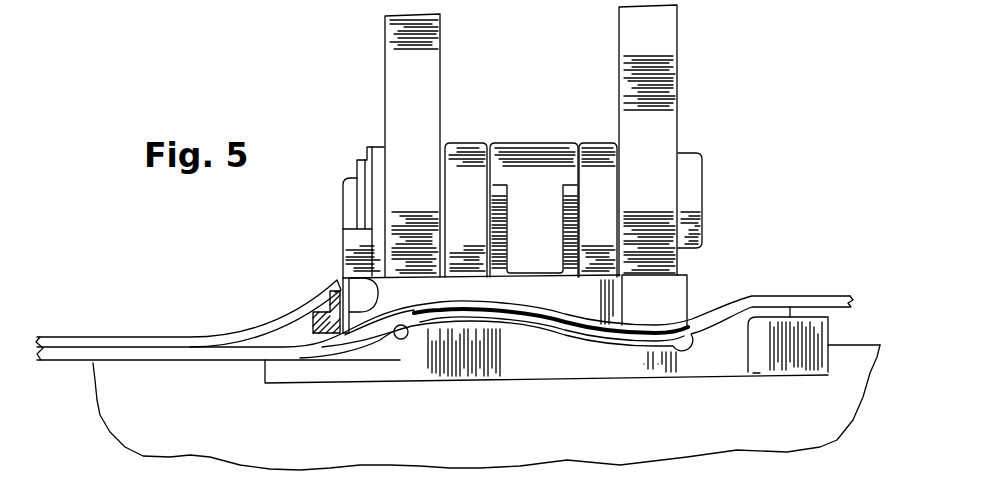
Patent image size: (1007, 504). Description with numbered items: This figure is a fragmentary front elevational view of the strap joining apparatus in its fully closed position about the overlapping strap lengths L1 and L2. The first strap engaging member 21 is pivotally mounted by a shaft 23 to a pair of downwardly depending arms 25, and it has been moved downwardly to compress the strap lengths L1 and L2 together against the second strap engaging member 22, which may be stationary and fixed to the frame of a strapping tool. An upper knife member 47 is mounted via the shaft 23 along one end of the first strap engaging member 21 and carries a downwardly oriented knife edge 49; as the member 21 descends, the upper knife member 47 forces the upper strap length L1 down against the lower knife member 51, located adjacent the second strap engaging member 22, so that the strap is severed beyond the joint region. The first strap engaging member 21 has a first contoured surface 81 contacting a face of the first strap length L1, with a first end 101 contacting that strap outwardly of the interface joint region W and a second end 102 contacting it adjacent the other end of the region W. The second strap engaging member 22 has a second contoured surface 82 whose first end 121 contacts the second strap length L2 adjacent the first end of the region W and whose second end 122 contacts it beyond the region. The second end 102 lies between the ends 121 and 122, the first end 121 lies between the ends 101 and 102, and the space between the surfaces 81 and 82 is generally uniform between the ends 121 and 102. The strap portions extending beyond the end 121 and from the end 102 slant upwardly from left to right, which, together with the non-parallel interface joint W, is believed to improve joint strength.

The first strap engaging member 21 is at (691, 284).
The second strap engaging member 22 is at (810, 378).
The shaft 23 is at (700, 197).
The downwardly depending arms 25 is at (616, 50).
The upper knife member 47 is at (342, 258).
The knife edge 49 is at (360, 305).
The lower knife member 51 is at (310, 327).
The first contoured surface 81 is at (470, 322).
The second contoured surface 82 is at (580, 312).
The first end of the first engaging surface 101 is at (398, 340).
The second end of the first engaging surface 102 is at (698, 342).
The first end of the second engaging surface 121 is at (397, 341).
The second end of the second engaging surface 122 is at (754, 374).
The interface joint region W is at (650, 332).
The first strap length L1 is at (776, 290).
The second strap length L2 is at (706, 349).